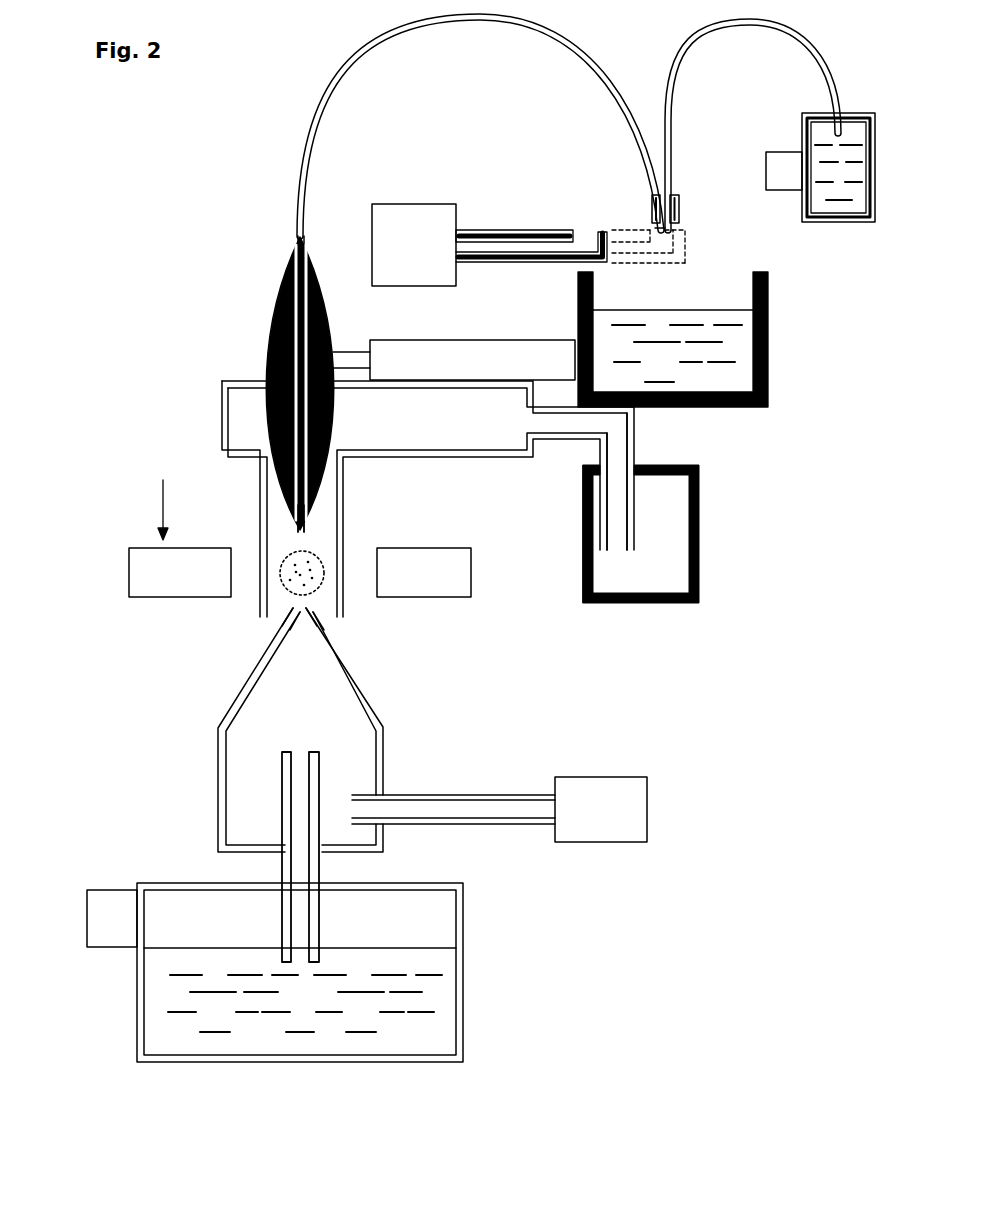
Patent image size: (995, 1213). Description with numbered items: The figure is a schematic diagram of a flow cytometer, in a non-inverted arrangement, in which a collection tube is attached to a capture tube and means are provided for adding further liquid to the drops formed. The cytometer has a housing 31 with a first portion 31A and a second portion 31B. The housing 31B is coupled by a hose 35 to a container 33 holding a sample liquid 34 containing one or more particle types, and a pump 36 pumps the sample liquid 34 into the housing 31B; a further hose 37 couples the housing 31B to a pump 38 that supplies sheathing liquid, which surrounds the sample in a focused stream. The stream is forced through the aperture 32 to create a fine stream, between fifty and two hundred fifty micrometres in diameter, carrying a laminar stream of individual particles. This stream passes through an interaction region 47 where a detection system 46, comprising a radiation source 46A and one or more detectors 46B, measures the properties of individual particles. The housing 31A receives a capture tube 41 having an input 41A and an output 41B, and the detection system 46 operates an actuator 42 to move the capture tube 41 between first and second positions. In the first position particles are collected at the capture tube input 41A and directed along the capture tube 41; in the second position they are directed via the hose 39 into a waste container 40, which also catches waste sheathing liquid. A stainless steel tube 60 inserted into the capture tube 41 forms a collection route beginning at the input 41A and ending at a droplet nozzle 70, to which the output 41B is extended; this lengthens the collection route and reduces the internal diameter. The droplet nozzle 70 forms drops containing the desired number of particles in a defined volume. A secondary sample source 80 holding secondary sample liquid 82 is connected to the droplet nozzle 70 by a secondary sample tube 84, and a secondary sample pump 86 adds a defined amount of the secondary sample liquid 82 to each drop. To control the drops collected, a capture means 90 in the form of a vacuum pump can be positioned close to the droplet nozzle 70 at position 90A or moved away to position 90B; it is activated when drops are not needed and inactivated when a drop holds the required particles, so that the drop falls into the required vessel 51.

The housing 31 is at (85, 545).
The first portion of housing 31A is at (245, 381).
The second portion of housing 31B is at (384, 726).
The aperture 32 is at (303, 621).
The container 33 is at (462, 957).
The sample liquid 34 is at (440, 1038).
The hose 35 is at (282, 865).
The pump 36 is at (112, 918).
The hose 37 is at (440, 795).
The pump 38 is at (601, 809).
The hose 39 is at (633, 457).
The waste container 40 is at (697, 561).
The capture tube 41 is at (290, 358).
The capture tube input 41A is at (293, 527).
The capture tube output 41B is at (665, 228).
The actuator 42 is at (454, 360).
The detection system 46 is at (165, 497).
The radiation source 46A is at (180, 572).
The detectors 46B is at (424, 572).
The interaction region 47 is at (313, 558).
The vessel 51 is at (588, 326).
The stainless steel tube 60 is at (483, 24).
The droplet nozzle 70 is at (681, 193).
The secondary sample source 80 is at (840, 222).
The secondary sample liquid 82 is at (822, 136).
The secondary sample tube 84 is at (753, 126).
The secondary sample pump 86 is at (784, 171).
The capture means 90 is at (414, 245).
The position close to droplet nozzle 90A is at (645, 228).
The position away from droplet nozzle 90B is at (481, 233).